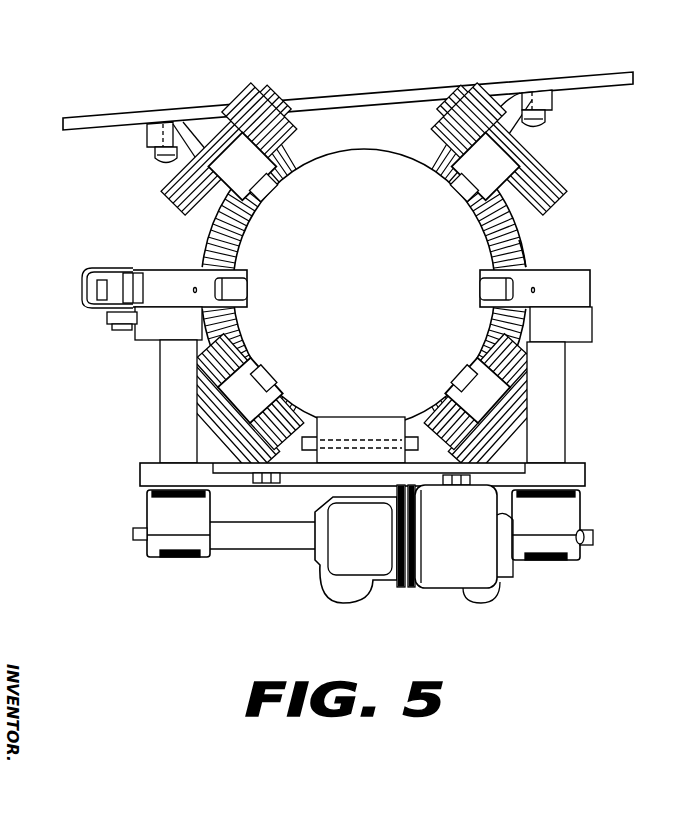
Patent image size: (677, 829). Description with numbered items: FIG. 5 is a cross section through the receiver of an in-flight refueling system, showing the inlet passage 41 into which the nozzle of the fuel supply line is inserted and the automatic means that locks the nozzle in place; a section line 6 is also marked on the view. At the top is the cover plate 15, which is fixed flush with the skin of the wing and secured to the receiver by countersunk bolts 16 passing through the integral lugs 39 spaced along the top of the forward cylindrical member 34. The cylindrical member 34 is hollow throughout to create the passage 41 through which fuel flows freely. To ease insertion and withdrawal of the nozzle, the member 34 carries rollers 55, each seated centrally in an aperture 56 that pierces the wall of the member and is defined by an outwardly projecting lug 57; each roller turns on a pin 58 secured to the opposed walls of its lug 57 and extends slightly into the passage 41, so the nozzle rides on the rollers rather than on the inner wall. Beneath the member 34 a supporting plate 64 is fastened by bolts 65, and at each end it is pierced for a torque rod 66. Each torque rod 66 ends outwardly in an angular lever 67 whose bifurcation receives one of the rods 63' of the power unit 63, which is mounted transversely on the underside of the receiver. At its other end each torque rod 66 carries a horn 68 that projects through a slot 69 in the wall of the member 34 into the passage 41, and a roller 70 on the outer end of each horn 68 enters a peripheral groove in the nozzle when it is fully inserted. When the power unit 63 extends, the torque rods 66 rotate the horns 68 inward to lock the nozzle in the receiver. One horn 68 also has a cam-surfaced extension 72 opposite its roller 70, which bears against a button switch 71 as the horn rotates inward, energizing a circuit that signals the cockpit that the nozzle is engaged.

The cover plate 15 is at (380, 95).
The countersunk bolts 16 is at (176, 108).
The lugs 39 is at (150, 138).
The passage 41 is at (392, 290).
The forward cylindrical member 34 is at (538, 247).
The slot 69 is at (532, 262).
The pin 58 is at (283, 146).
The lug 57 is at (190, 185).
The aperture 56 is at (255, 200).
The rollers 55 is at (272, 178).
The horn 68 is at (575, 292).
The roller 70 is at (245, 290).
The button switch 71 is at (128, 270).
The cam-surfaced extension 72 is at (143, 275).
The torque rod 66 is at (160, 378).
The supporting plate 64 is at (567, 468).
The bolts 65 is at (266, 483).
The angular lever 67 is at (160, 512).
The rods 63' is at (424, 548).
The power unit 63 is at (414, 554).
The section line 6- 6 is at (100, 257).